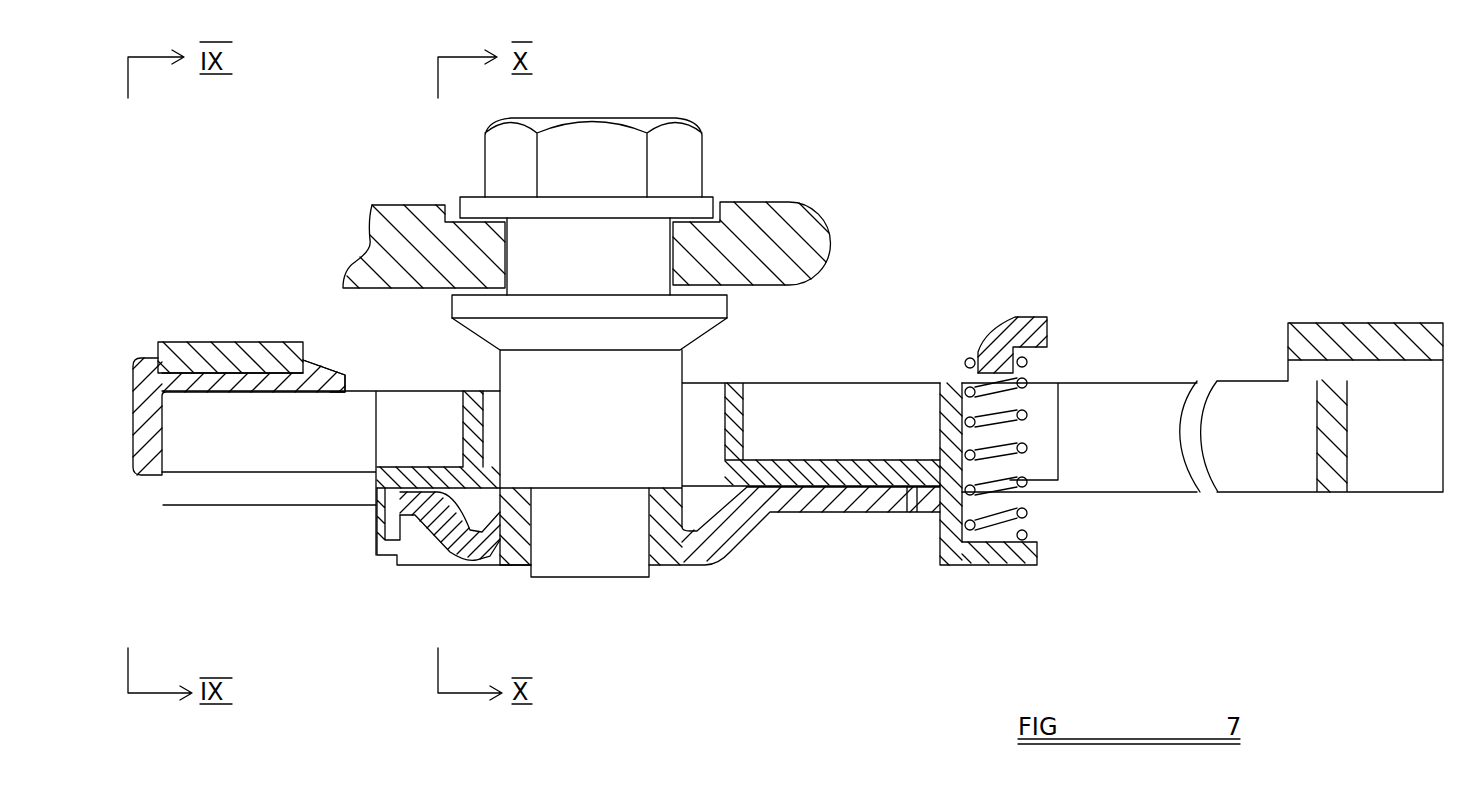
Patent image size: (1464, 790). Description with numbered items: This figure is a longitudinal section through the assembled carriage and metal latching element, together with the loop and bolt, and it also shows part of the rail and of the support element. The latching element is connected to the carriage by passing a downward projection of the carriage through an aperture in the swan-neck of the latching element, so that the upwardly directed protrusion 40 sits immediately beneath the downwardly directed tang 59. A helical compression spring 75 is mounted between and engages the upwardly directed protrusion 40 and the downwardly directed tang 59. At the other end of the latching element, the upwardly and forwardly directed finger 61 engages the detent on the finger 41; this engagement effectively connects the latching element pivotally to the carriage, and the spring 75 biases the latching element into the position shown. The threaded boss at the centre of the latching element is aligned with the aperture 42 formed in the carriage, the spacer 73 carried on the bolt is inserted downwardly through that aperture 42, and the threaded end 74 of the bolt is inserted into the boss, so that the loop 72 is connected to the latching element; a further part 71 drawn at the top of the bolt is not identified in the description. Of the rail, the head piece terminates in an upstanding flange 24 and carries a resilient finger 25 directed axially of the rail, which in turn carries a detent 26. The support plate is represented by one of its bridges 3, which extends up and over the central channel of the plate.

The bridge 3 is at (217, 342).
The upstanding flange 24 is at (147, 357).
The resilient finger 25 is at (287, 342).
The detent 26 is at (333, 375).
The upwardly directed protrusion 40 is at (1003, 550).
The finger 41 is at (377, 517).
The aperture 42 is at (712, 385).
The downwardly directed tang 59 is at (966, 362).
The upwardly and forwardly directed finger 61 is at (428, 512).
The nut 71 is at (685, 162).
The loop 72 is at (412, 222).
The spacer 73 is at (703, 430).
The threaded end 74 is at (622, 548).
The helical compression spring 75 is at (1024, 417).